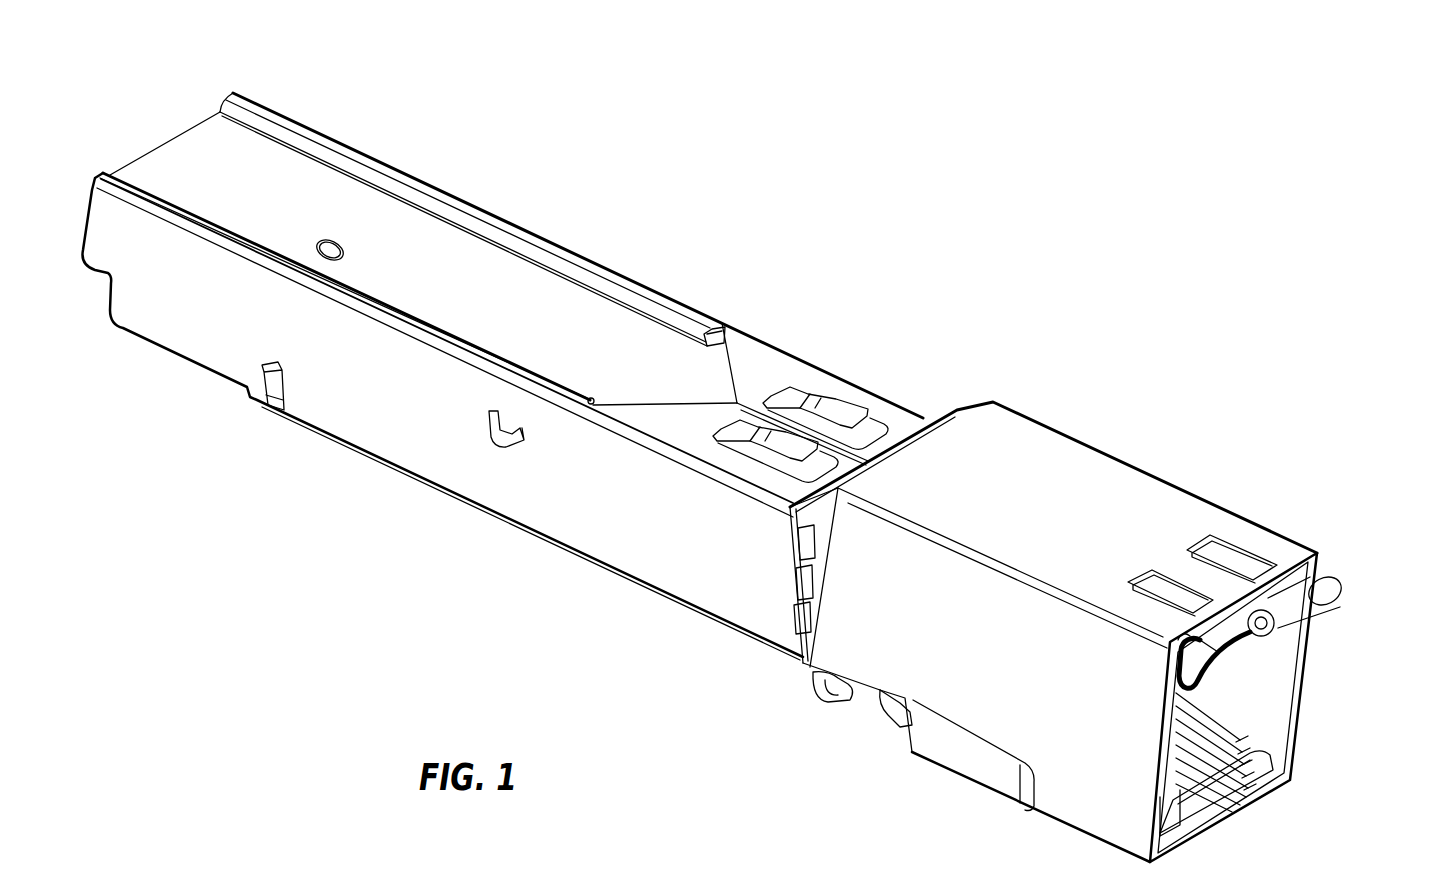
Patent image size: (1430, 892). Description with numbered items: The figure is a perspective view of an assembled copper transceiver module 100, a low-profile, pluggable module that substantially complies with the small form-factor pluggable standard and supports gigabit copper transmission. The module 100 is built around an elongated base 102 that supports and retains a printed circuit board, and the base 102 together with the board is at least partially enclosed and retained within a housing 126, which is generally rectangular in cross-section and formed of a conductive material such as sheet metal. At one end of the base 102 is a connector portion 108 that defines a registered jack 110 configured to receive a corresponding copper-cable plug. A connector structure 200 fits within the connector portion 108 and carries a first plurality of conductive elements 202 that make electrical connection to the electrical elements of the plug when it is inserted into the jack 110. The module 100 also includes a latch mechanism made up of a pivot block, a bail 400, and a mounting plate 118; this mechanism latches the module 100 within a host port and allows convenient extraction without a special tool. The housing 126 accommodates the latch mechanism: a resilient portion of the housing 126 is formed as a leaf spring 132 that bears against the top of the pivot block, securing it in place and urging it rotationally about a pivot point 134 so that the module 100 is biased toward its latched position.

The transceiver module 100 is at (1010, 271).
The base 102 is at (183, 170).
The connector portion 108 is at (993, 372).
The RJ-45 jack 110 is at (1262, 670).
The mounting plate 118 is at (980, 763).
The housing 126 is at (420, 425).
The leaf spring 132 is at (883, 720).
The pivot point 134 is at (853, 697).
The connector structure 200 is at (1270, 740).
The first plurality of conductive elements 202 is at (1195, 828).
The bail 400 is at (1353, 582).